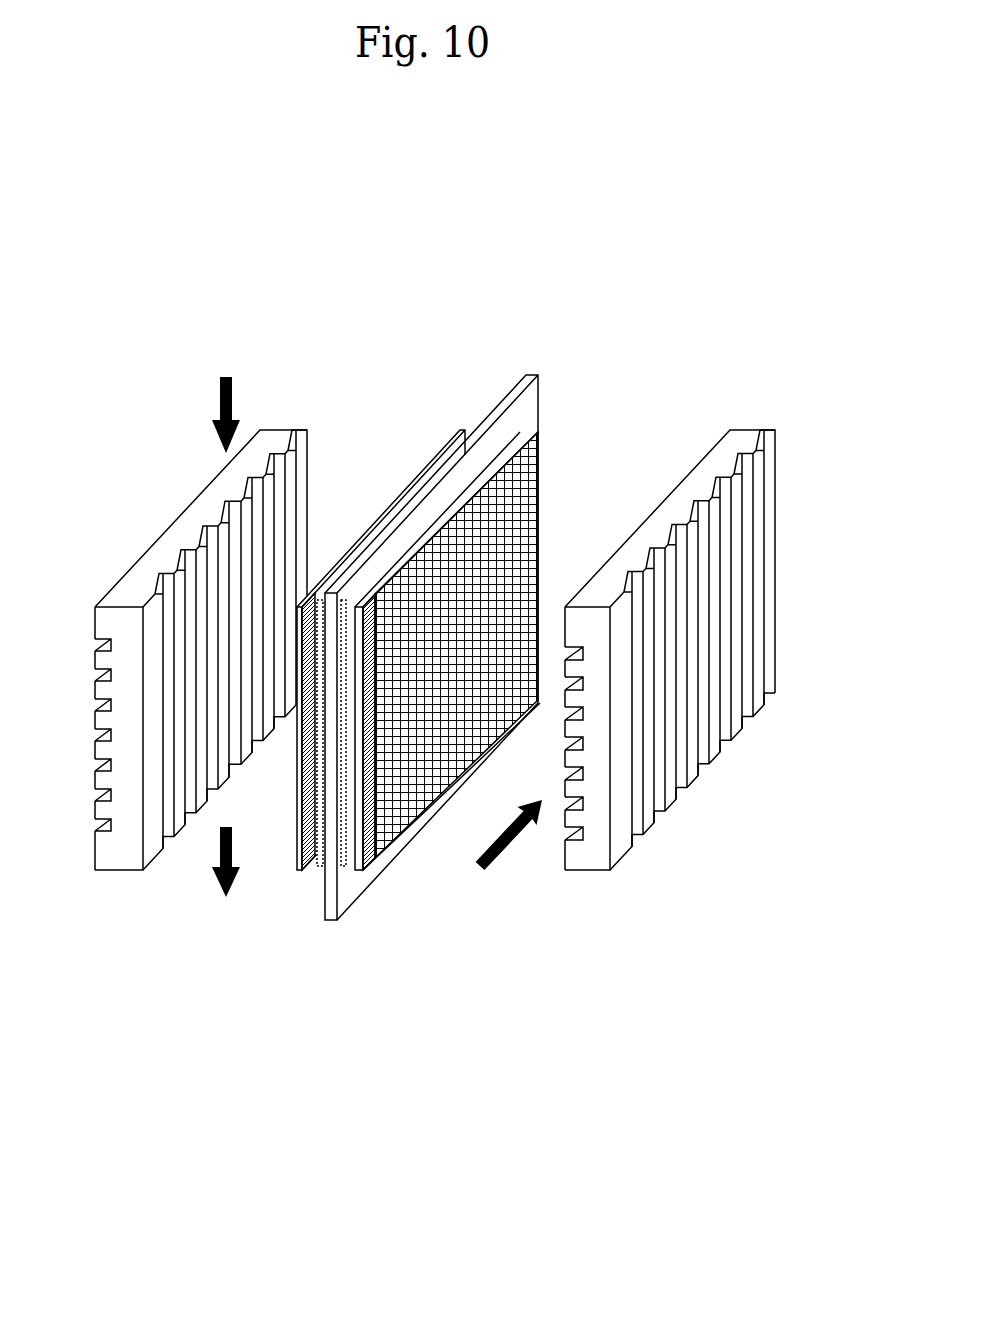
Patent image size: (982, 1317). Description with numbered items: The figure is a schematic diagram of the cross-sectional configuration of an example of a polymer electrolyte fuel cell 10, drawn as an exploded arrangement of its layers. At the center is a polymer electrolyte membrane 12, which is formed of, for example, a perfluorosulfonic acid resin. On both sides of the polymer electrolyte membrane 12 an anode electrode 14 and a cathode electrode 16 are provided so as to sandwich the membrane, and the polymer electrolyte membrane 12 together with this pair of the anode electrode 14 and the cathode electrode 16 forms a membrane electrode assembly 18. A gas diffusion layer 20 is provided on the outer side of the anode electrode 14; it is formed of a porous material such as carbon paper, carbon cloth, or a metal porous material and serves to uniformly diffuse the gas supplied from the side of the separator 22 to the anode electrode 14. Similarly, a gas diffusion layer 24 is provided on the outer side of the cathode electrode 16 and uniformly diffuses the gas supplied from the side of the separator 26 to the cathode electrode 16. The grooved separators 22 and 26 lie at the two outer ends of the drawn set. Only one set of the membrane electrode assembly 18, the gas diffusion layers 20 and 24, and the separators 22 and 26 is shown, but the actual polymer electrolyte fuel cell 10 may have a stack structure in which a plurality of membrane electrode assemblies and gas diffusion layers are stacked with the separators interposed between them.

The polymer electrolyte fuel cell 10 is at (170, 1147).
The polymer electrolyte membrane 12 is at (334, 922).
The anode electrode 14 is at (317, 870).
The cathode electrode 16 is at (352, 872).
The membrane electrode assembly 18 is at (409, 735).
The gas diffusion layer 20 is at (300, 870).
The separator 22 is at (125, 872).
The gas diffusion layer 24 is at (405, 855).
The separator 26 is at (602, 873).